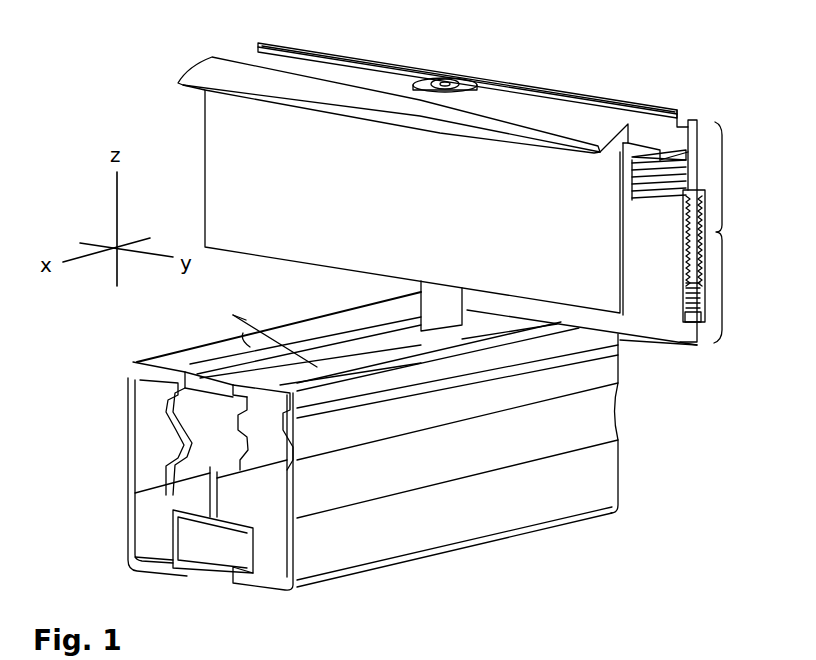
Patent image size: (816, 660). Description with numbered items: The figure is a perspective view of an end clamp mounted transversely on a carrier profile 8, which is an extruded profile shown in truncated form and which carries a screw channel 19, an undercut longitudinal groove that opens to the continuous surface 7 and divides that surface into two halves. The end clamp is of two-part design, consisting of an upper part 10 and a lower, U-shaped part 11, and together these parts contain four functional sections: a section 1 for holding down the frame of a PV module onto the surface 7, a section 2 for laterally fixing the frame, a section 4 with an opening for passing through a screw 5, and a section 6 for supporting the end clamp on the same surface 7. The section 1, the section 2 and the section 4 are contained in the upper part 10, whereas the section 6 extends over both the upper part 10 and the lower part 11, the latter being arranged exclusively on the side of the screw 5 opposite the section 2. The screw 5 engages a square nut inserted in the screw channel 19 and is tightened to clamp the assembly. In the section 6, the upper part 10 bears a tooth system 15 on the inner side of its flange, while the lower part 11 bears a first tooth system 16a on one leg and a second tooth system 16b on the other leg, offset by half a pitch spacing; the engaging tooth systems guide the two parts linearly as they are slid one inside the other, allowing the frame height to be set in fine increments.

The section for holding down 1 is at (613, 140).
The section for lateral fixing 2 is at (628, 225).
The section for passing through the screw 4 is at (655, 150).
The screw 5 is at (448, 80).
The section for supporting the end clamp 6 is at (731, 232).
The surface 7 is at (232, 326).
The carrier profile 8 is at (133, 396).
The upper part 10 is at (540, 85).
The lower, U-shaped part 11 is at (700, 342).
The tooth system 15 is at (690, 178).
The first tooth system 16a is at (680, 305).
The second tooth system 16b is at (707, 298).
The screw channel 19 is at (134, 435).